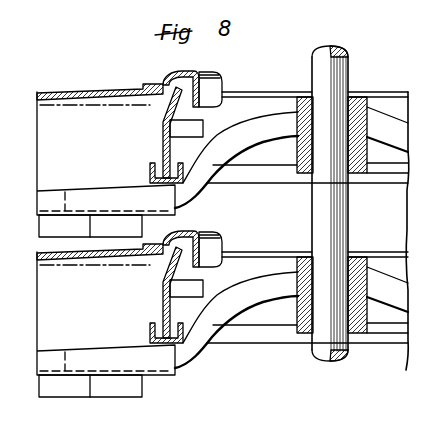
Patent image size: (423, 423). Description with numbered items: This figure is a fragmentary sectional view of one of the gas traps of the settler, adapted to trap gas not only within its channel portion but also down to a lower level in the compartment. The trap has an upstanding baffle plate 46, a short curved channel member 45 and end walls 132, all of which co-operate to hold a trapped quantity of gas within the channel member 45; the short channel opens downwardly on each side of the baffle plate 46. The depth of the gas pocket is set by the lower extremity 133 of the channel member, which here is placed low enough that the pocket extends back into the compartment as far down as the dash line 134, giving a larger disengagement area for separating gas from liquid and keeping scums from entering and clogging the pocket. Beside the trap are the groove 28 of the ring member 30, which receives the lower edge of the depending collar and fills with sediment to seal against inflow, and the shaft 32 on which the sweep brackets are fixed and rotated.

The dash line 134 is at (90, 107).
The baffle plate 46 is at (172, 128).
The end walls 132 is at (200, 126).
The groove 28 is at (152, 172).
The channel member 45 is at (212, 77).
The lower extremity of the channel member 133 is at (206, 113).
The ring member 30 is at (265, 176).
The shaft 32 is at (346, 72).